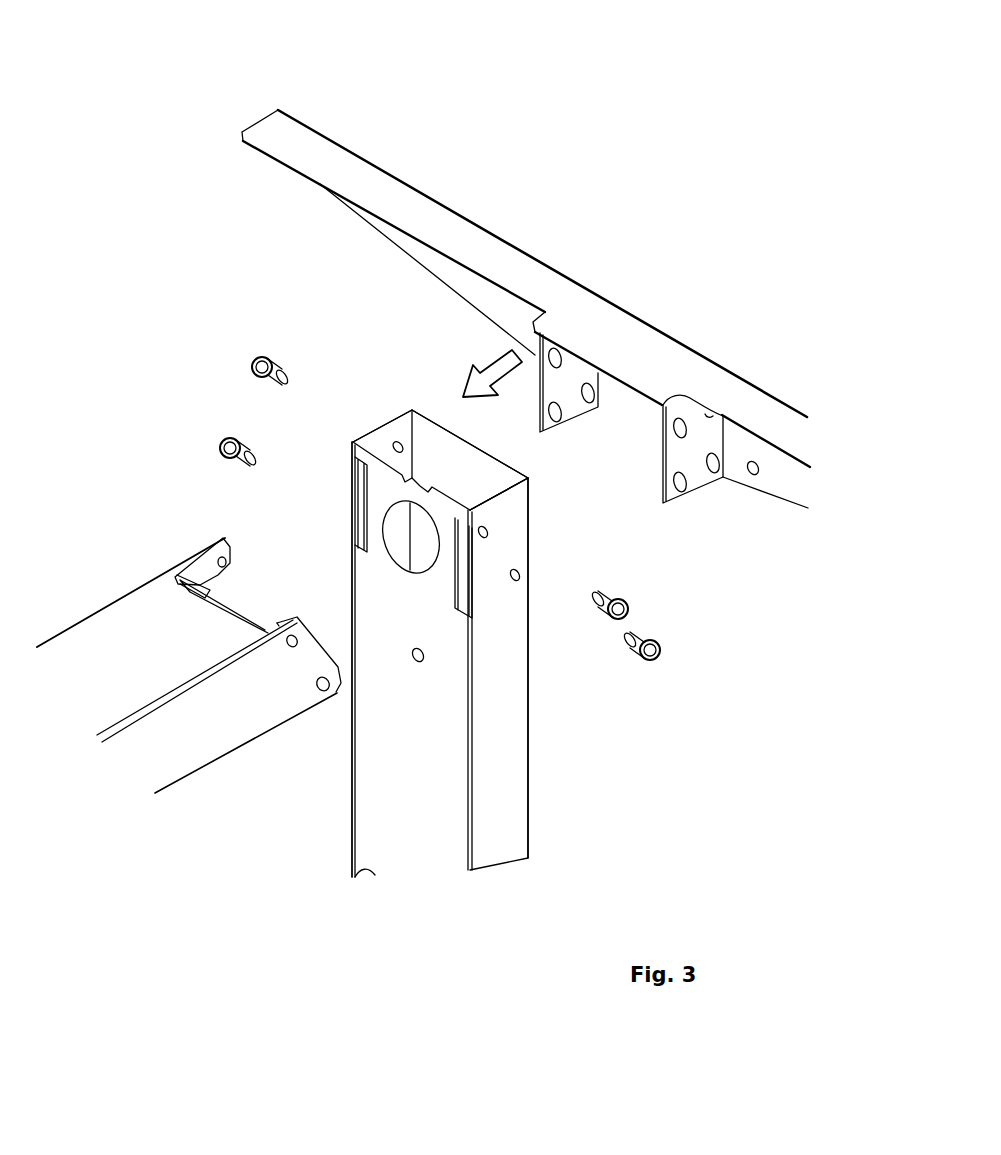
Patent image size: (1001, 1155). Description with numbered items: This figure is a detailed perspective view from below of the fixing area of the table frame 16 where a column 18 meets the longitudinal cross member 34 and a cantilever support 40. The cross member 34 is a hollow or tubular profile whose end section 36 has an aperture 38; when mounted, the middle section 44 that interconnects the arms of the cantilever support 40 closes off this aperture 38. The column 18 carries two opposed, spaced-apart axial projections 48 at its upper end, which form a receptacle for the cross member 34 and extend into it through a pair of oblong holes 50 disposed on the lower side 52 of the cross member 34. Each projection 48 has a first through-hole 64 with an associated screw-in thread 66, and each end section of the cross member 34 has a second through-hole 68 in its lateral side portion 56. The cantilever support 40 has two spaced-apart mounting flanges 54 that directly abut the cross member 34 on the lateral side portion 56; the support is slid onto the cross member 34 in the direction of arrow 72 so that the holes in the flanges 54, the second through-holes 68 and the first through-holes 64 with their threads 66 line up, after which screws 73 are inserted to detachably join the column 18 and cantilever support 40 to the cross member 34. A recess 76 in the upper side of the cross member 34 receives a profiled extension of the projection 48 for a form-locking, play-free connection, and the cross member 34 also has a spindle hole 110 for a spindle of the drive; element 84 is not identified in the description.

The table frame 16 is at (619, 118).
The column 18 is at (105, 698).
The longitudinal cross member 34 is at (436, 803).
The end section 36 is at (376, 500).
The aperture 38 is at (432, 456).
The cantilever support 40 is at (427, 210).
The middle section 44 is at (622, 345).
The axial projection 48 is at (230, 588).
The oblong hole 50 is at (352, 514).
The lower side 52 is at (400, 835).
The mounting flange 54 is at (672, 462).
The lateral side portion 56 is at (518, 530).
The first through-hole 64 is at (323, 692).
The screw-in thread 66 is at (229, 566).
The second through-hole 68 is at (551, 410).
The arrow 72 is at (482, 372).
The screw 73 is at (231, 438).
The recess 76 is at (398, 442).
The strap 84 is at (236, 622).
The spindle hole 110 is at (423, 664).